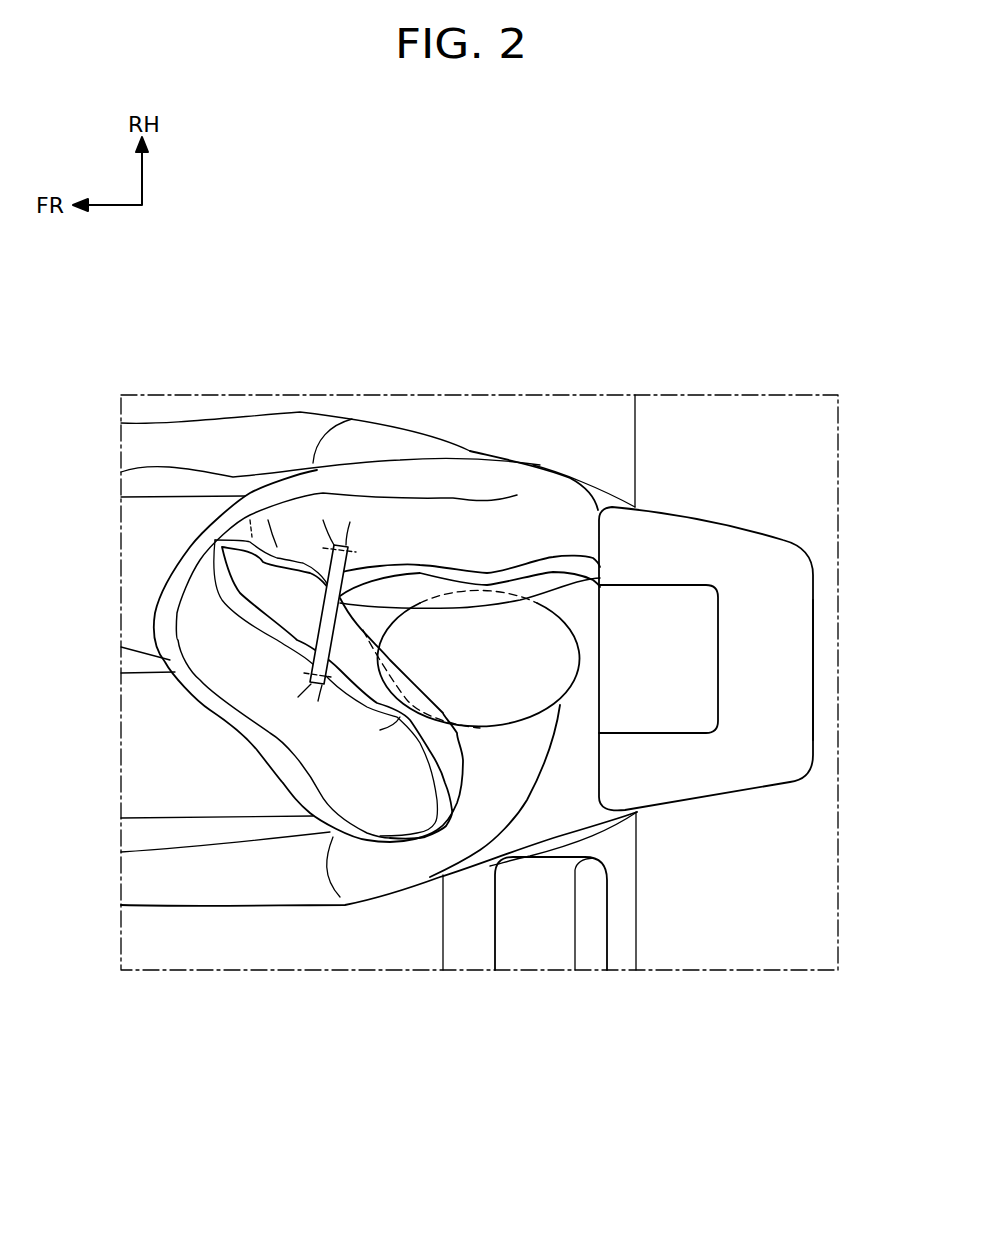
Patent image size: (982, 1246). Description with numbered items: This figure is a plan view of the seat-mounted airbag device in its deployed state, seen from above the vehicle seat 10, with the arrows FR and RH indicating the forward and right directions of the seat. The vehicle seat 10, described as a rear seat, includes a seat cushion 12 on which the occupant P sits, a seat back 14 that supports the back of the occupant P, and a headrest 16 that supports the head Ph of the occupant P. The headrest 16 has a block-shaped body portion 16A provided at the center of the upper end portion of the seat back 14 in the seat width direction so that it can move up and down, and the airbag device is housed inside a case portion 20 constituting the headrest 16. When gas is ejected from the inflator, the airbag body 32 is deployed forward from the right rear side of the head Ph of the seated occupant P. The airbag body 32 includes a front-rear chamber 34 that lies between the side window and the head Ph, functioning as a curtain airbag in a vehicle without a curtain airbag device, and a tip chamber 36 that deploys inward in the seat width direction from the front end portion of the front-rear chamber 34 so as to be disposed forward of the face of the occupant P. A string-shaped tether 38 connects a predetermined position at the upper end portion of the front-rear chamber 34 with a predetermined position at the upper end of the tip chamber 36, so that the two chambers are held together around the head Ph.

The vehicle seat 10 is at (532, 446).
The seat cushion 12 is at (345, 925).
The seat back 14 is at (620, 862).
The headrest 16 is at (703, 524).
The body portion 16A is at (700, 648).
The case portion 20 is at (785, 578).
The airbag body 32 is at (312, 634).
The front-rear chamber 34 is at (427, 520).
The tip chamber 36 is at (260, 692).
The tether 38 is at (300, 610).
The occupant P is at (505, 725).
The head Ph is at (555, 658).